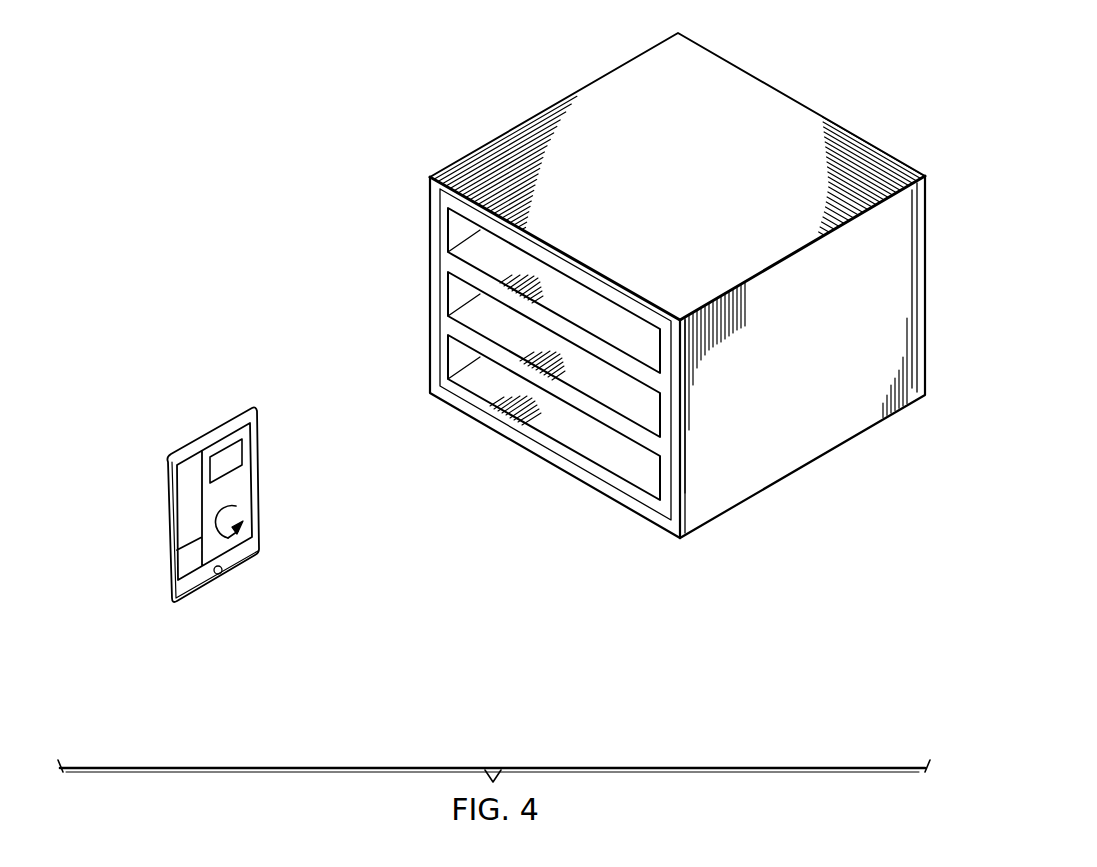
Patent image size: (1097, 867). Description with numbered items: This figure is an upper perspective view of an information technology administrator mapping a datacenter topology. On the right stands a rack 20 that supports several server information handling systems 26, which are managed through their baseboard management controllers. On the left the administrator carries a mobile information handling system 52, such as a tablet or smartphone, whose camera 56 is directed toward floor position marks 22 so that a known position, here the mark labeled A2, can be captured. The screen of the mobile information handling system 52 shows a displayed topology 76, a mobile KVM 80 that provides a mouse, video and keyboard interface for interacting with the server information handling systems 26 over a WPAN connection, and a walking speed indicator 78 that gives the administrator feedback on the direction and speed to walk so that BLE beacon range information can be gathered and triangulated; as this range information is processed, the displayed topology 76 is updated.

The rack 20 is at (677, 279).
The server information handling system 26 is at (554, 344).
The mobile information handling system 52 is at (239, 536).
The displayed topology 76 is at (185, 500).
The walking speed indicator 78 is at (248, 513).
The mobile KVM 80 is at (232, 455).
The camera 56 is at (227, 572).
The floor position marks 22 is at (221, 614).